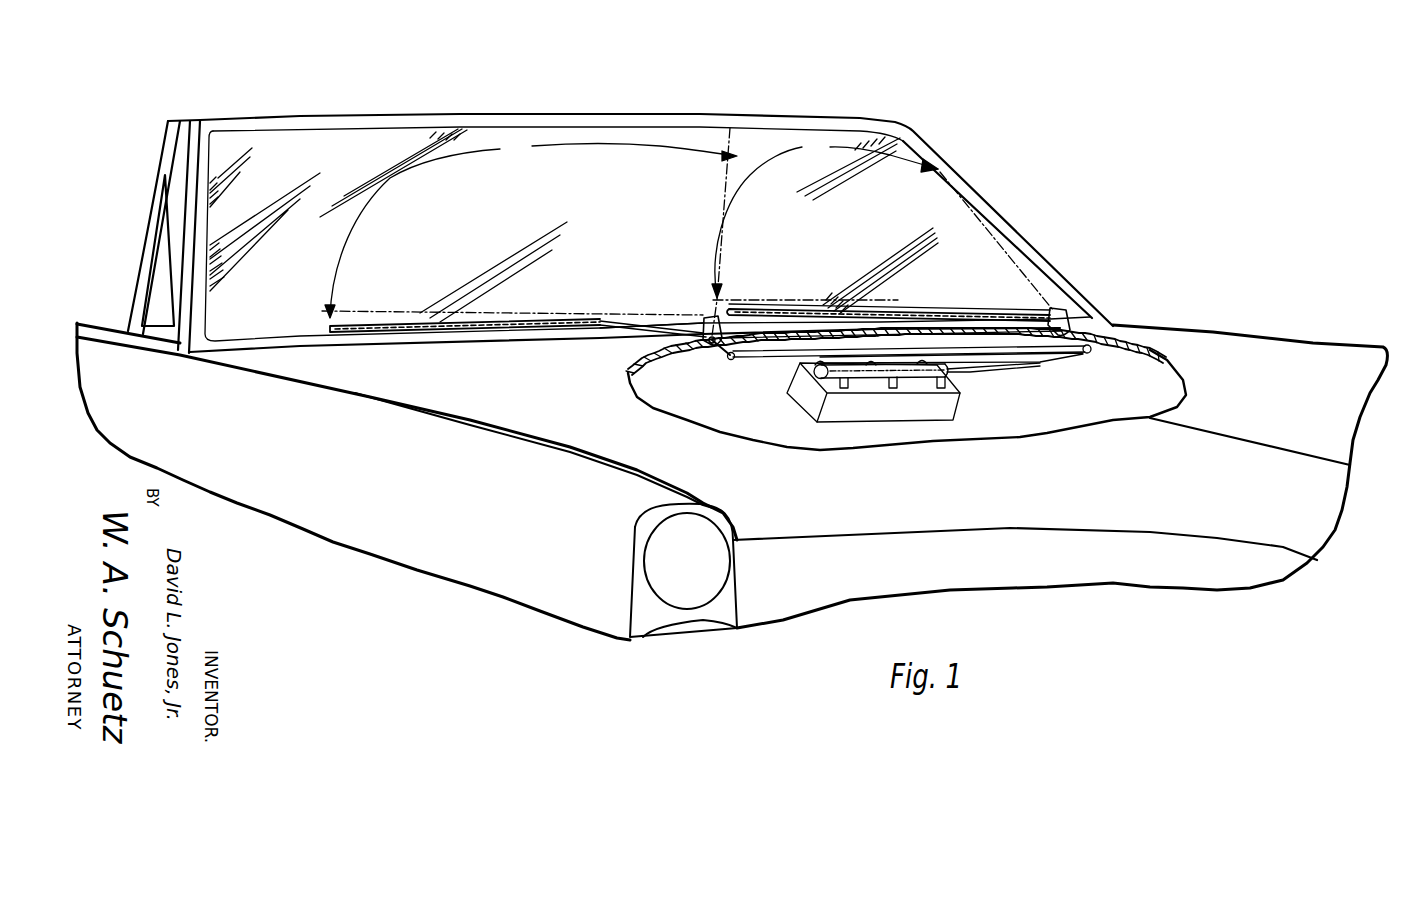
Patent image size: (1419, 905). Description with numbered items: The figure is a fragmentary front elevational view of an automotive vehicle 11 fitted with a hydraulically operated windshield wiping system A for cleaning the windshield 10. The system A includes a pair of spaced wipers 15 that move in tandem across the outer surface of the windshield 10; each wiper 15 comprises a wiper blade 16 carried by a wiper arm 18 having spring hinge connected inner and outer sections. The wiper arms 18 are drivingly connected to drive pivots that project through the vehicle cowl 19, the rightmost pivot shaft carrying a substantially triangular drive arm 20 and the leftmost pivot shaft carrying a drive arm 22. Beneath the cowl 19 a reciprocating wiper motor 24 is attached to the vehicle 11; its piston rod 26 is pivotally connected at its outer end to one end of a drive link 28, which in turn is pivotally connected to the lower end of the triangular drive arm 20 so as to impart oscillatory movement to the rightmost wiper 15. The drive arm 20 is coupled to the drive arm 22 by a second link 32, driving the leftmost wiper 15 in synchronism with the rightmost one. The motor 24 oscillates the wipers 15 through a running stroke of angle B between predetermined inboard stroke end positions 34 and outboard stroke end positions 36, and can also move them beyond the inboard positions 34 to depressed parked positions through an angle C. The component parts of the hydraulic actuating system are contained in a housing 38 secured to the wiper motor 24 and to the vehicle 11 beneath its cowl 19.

The windshield 10 is at (340, 132).
The automotive vehicle 11 is at (192, 121).
The wipers 15 is at (667, 312).
The wiper blades 16 is at (425, 333).
The wiper arms 18 is at (606, 323).
The vehicle cowl 19 is at (637, 349).
The triangular drive arm 20 is at (1091, 350).
The drive arm 22 is at (713, 352).
The wiper motor 24 is at (917, 380).
The piston rod 26 is at (967, 376).
The drive link 28 is at (1033, 365).
The second link 32 is at (766, 356).
The inboard stroke end positions 34 is at (396, 309).
The outboard stroke end positions 36 is at (728, 186).
The housing 38 is at (802, 392).
The windshield wiping system A is at (863, 420).
The running stroke angle B is at (631, 226).
The depressed park angle C is at (332, 314).